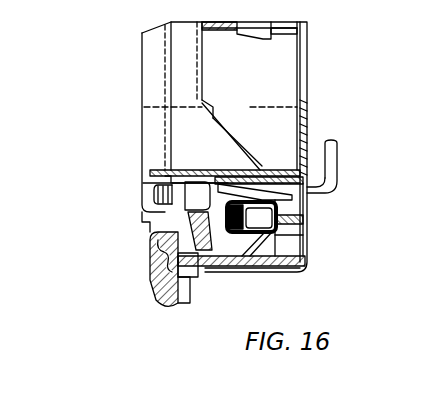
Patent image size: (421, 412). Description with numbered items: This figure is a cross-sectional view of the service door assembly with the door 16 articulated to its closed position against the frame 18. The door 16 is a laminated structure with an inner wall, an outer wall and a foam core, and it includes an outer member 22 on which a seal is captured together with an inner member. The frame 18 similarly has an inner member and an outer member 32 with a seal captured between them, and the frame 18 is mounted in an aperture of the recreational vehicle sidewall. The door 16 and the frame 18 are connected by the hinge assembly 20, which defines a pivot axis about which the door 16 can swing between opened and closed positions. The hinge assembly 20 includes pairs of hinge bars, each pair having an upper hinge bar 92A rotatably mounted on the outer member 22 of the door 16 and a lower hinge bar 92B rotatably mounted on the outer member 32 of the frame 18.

The door 16 is at (308, 78).
The frame 18 is at (285, 274).
The hinge assembly 20 is at (126, 220).
The outer member 22 is at (152, 160).
The outer member 32 is at (160, 308).
The upper hinge bar 92A is at (170, 195).
The lower hinge bar 92B is at (164, 246).